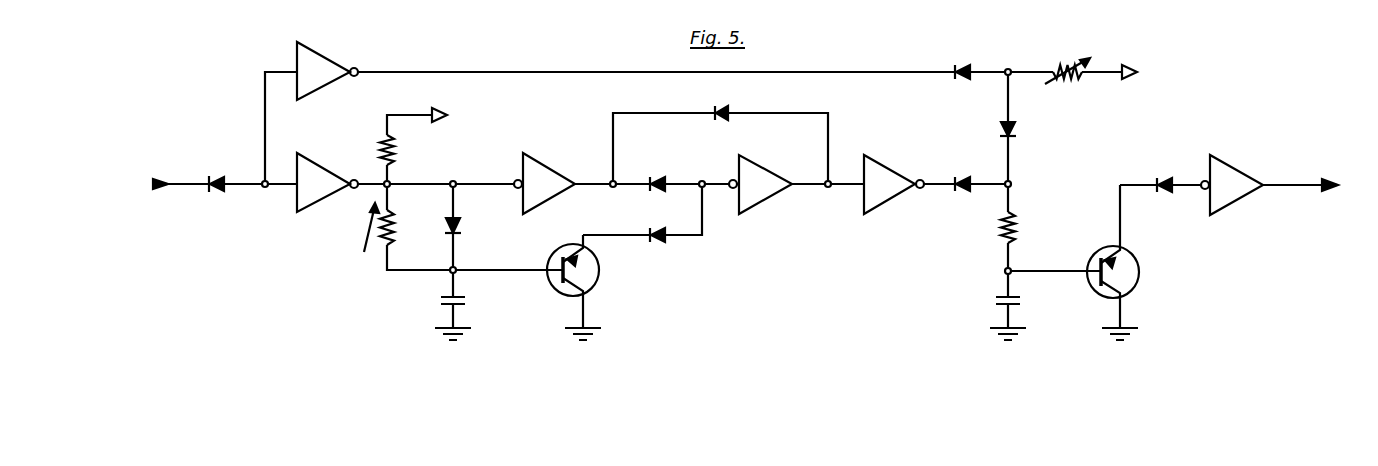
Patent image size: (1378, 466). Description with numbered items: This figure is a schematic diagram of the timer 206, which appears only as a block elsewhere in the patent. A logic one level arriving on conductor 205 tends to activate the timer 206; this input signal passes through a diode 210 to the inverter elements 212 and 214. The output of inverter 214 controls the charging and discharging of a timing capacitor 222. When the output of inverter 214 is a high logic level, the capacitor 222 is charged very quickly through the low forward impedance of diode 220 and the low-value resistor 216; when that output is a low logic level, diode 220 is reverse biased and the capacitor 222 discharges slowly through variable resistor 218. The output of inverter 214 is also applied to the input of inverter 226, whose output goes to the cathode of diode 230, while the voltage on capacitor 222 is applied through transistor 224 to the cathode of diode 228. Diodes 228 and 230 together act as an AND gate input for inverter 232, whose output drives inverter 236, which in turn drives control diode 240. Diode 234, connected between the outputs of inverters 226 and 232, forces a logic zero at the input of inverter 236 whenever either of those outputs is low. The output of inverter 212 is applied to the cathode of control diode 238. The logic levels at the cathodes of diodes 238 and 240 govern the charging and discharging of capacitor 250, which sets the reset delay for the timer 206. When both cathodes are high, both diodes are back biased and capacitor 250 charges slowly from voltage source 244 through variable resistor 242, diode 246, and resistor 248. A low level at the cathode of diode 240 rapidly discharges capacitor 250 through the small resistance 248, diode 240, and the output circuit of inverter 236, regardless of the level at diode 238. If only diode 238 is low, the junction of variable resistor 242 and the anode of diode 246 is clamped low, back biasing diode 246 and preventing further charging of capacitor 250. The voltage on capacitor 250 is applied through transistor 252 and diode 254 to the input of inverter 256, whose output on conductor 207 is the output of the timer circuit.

The conductor 205 is at (182, 183).
The conductor 207 is at (1288, 190).
The timer 206 is at (813, 272).
The diode 210 is at (215, 192).
The inverter 212 is at (338, 48).
The inverter 214 is at (334, 154).
The resistor 216 is at (396, 151).
The variable resistor 218 is at (373, 247).
The diode 220 is at (461, 230).
The timing capacitor 222 is at (437, 304).
The transistor 224 is at (556, 293).
The inverter 226 is at (556, 153).
The diode 228 is at (653, 246).
The diode 230 is at (656, 172).
The inverter 232 is at (770, 168).
The diode 234 is at (723, 105).
The inverter 236 is at (892, 168).
The control diode 238 is at (960, 82).
The control diode 240 is at (959, 192).
The variable resistor 242 is at (1056, 64).
The voltage source 244 is at (1130, 68).
The diode 246 is at (1018, 133).
The resistor 248 is at (1019, 226).
The capacitor 250 is at (992, 304).
The transistor 252 is at (1140, 272).
The diode 254 is at (1164, 175).
The inverter 256 is at (1256, 154).